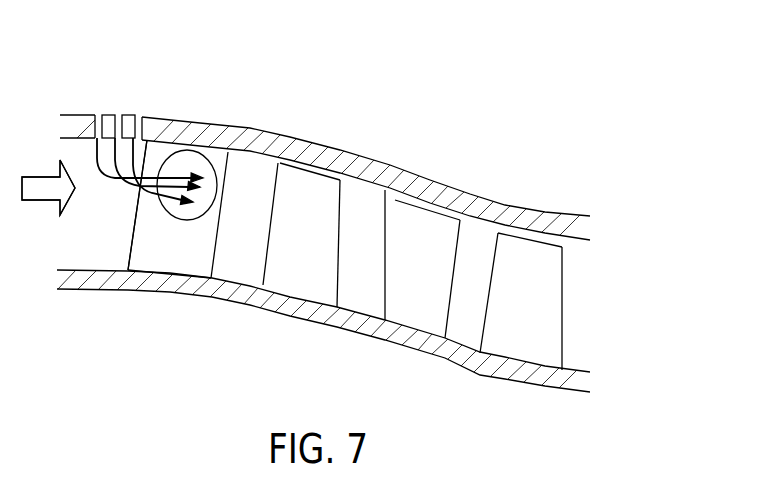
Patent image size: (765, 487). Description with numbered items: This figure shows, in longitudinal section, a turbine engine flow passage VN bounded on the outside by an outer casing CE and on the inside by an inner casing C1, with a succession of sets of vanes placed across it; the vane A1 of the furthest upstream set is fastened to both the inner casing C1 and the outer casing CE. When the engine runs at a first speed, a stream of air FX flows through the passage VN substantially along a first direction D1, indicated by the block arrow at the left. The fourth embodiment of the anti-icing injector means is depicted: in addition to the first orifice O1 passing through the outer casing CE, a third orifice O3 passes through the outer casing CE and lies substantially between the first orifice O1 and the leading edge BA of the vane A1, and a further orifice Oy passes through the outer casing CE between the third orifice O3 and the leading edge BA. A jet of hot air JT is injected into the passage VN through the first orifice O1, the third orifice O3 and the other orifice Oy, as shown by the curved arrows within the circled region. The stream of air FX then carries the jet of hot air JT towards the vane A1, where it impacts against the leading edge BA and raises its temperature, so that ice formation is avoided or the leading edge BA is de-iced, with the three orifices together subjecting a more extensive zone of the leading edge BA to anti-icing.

The first orifice O1 is at (91, 98).
The third orifice O3 is at (119, 98).
The orifice Oy is at (149, 99).
The jet of hot air JT is at (212, 137).
The outer casing CE is at (426, 180).
The flow passage VN is at (585, 302).
The leading edge BA is at (118, 246).
The vane A1 is at (167, 272).
The inner casing C1 is at (338, 337).
The stream of air FX is at (48, 181).
The first direction D1 is at (47, 195).